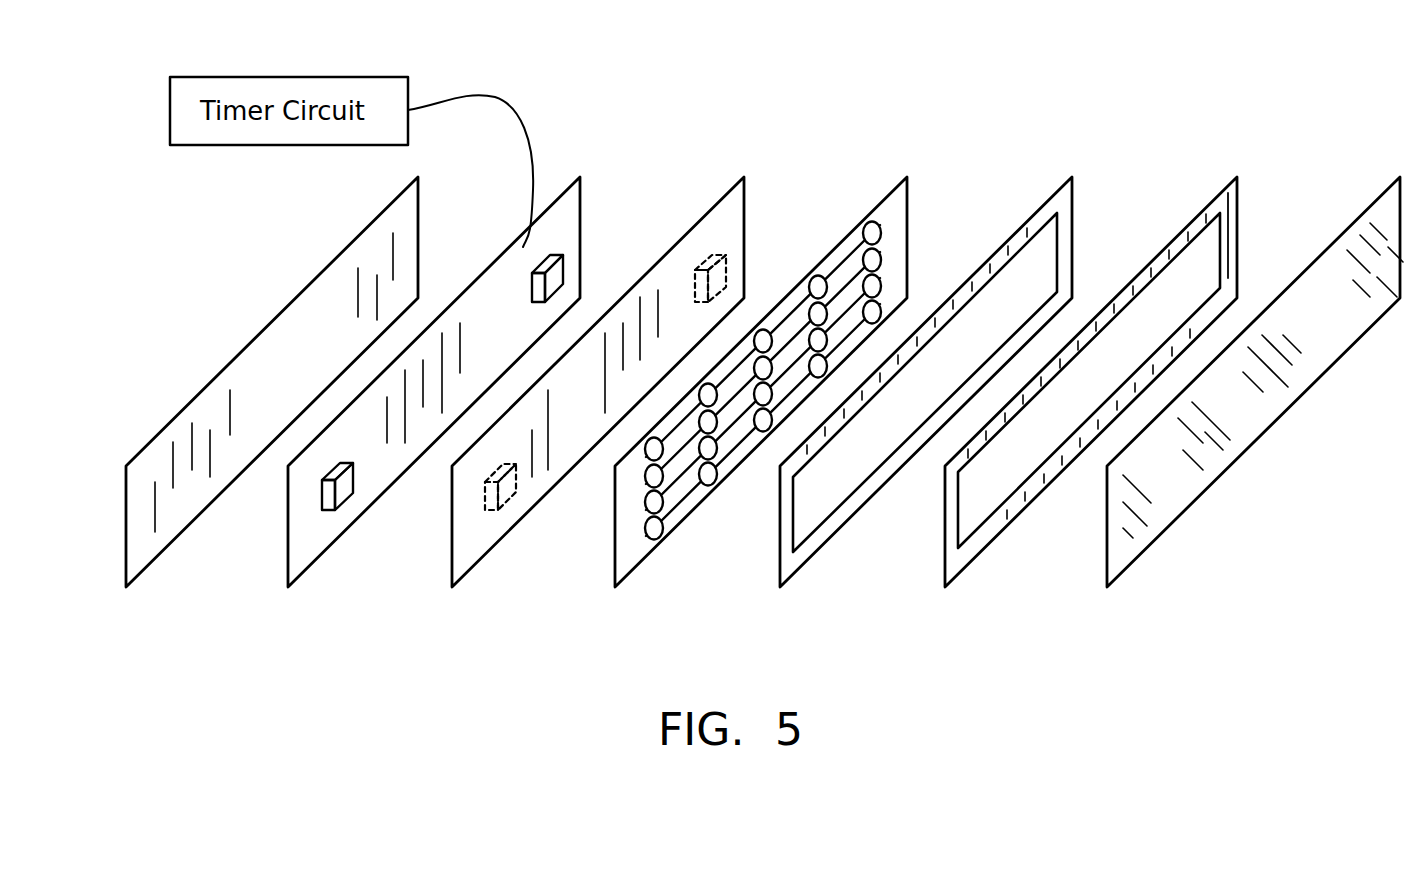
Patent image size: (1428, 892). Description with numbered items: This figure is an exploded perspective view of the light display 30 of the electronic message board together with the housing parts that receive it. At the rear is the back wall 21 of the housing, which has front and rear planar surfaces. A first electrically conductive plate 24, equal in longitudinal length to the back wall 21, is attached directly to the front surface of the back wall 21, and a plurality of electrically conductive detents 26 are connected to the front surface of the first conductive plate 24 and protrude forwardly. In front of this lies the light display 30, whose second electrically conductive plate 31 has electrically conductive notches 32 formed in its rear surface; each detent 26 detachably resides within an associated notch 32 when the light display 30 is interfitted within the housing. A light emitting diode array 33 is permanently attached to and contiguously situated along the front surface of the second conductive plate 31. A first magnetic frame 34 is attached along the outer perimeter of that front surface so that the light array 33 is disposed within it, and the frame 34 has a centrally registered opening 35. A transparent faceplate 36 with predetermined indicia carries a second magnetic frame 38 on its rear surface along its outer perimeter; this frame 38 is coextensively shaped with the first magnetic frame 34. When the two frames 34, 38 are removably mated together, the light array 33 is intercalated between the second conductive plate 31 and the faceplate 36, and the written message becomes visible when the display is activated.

The back wall 21 is at (177, 515).
The first electrically conductive plate 24 is at (317, 545).
The electrically conductive detents 26 is at (345, 500).
The light display 30 is at (835, 321).
The second electrically conductive plate 31 is at (723, 215).
The electrically conductive notches 32 is at (497, 510).
The light emitting diode array 33 is at (890, 248).
The first magnetic frame 34 is at (1053, 203).
The centrally registered opening 35 is at (1027, 267).
The transparent faceplate 36 is at (1343, 250).
The second magnetic frame 38 is at (1237, 178).